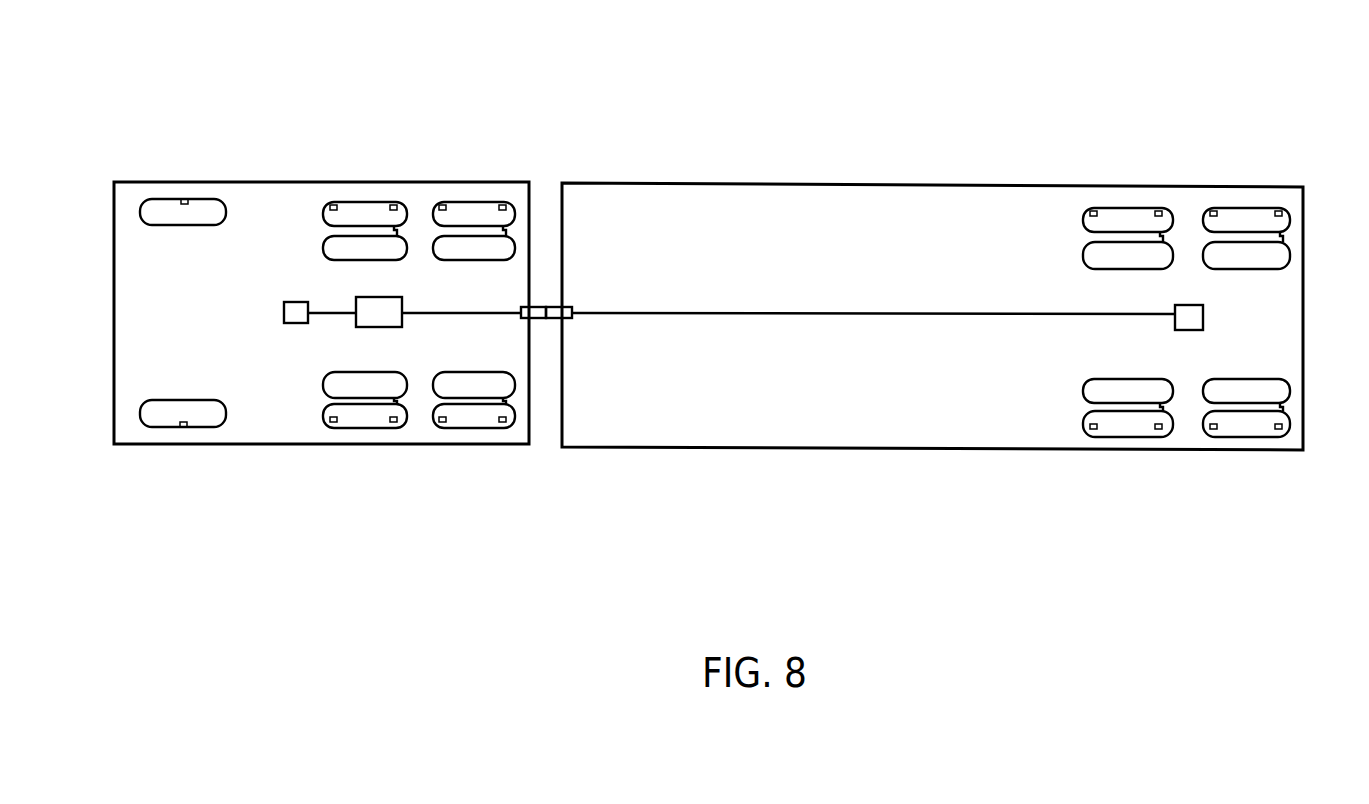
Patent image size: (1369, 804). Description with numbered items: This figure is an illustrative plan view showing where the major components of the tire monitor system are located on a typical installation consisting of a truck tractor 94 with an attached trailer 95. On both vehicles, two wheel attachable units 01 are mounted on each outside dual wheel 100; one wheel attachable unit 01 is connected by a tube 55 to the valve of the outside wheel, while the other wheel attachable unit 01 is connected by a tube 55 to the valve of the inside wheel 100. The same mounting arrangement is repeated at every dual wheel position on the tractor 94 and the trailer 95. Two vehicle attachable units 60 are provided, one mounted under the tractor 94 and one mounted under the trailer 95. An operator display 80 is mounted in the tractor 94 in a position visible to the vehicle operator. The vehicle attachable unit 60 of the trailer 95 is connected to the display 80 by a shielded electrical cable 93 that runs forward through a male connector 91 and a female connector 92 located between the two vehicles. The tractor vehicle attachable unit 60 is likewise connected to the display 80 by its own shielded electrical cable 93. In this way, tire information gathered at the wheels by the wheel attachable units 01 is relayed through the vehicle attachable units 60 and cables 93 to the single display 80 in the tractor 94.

The truck tractor 94 is at (202, 182).
The trailer 95 is at (835, 183).
The wheel attachable unit 01 is at (503, 205).
The dual wheel 100 is at (361, 203).
The tube 55 is at (503, 232).
The shielded electrical cable 93 is at (338, 313).
The male connector 91 is at (520, 307).
The female connector 92 is at (572, 307).
The vehicle attachable unit 60 is at (285, 323).
The operator display 80 is at (395, 320).